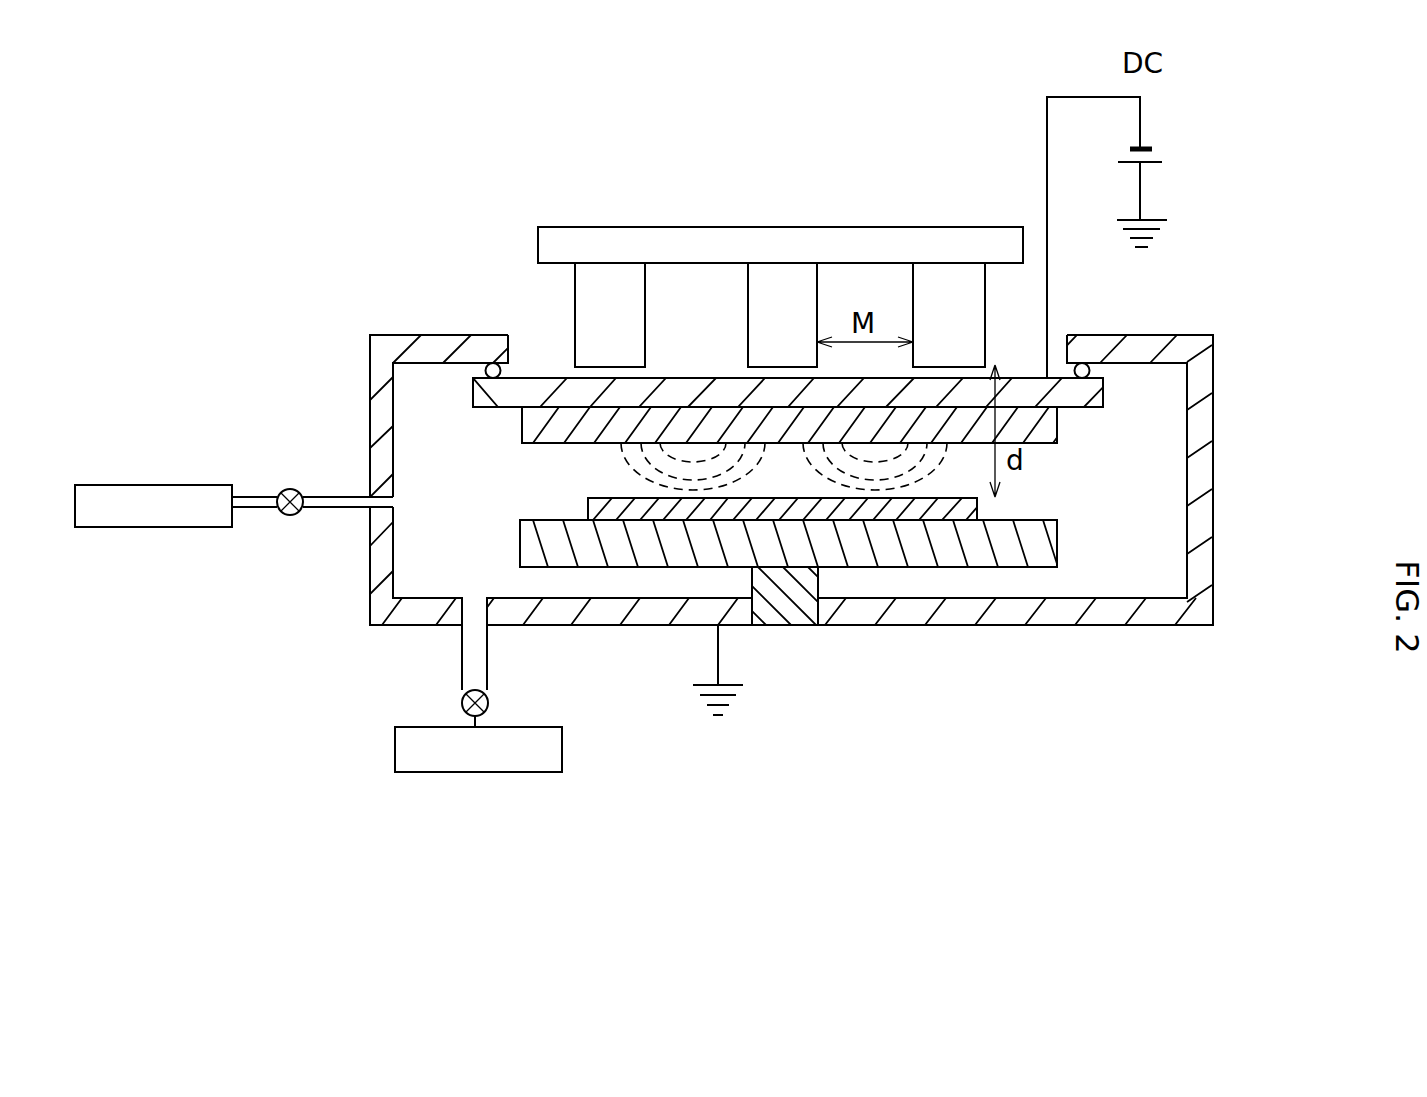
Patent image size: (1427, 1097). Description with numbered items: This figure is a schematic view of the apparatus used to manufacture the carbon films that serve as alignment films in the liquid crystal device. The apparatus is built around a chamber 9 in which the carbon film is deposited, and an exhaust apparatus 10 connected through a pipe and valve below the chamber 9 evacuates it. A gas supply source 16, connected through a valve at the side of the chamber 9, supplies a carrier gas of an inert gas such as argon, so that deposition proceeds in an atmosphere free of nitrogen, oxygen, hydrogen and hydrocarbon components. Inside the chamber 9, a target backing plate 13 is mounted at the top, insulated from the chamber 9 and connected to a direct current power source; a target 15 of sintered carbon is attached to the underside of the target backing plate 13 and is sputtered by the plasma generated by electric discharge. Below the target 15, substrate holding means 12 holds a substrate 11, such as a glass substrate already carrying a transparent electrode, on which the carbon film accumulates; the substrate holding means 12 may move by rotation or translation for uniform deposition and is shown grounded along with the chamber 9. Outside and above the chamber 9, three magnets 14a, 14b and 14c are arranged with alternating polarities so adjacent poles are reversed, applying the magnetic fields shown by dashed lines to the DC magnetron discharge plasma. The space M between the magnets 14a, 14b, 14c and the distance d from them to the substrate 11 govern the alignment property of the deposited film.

The chamber 9 is at (1213, 457).
The exhaust apparatus 10 is at (543, 772).
The substrate 11 is at (977, 510).
The substrate holding means 12 is at (1057, 542).
The target backing plate 13 is at (1103, 392).
The magnet 14a is at (575, 298).
The magnet 14b is at (748, 312).
The magnet 14c is at (913, 312).
The target 15 is at (522, 428).
The gas supply source 16 is at (171, 485).